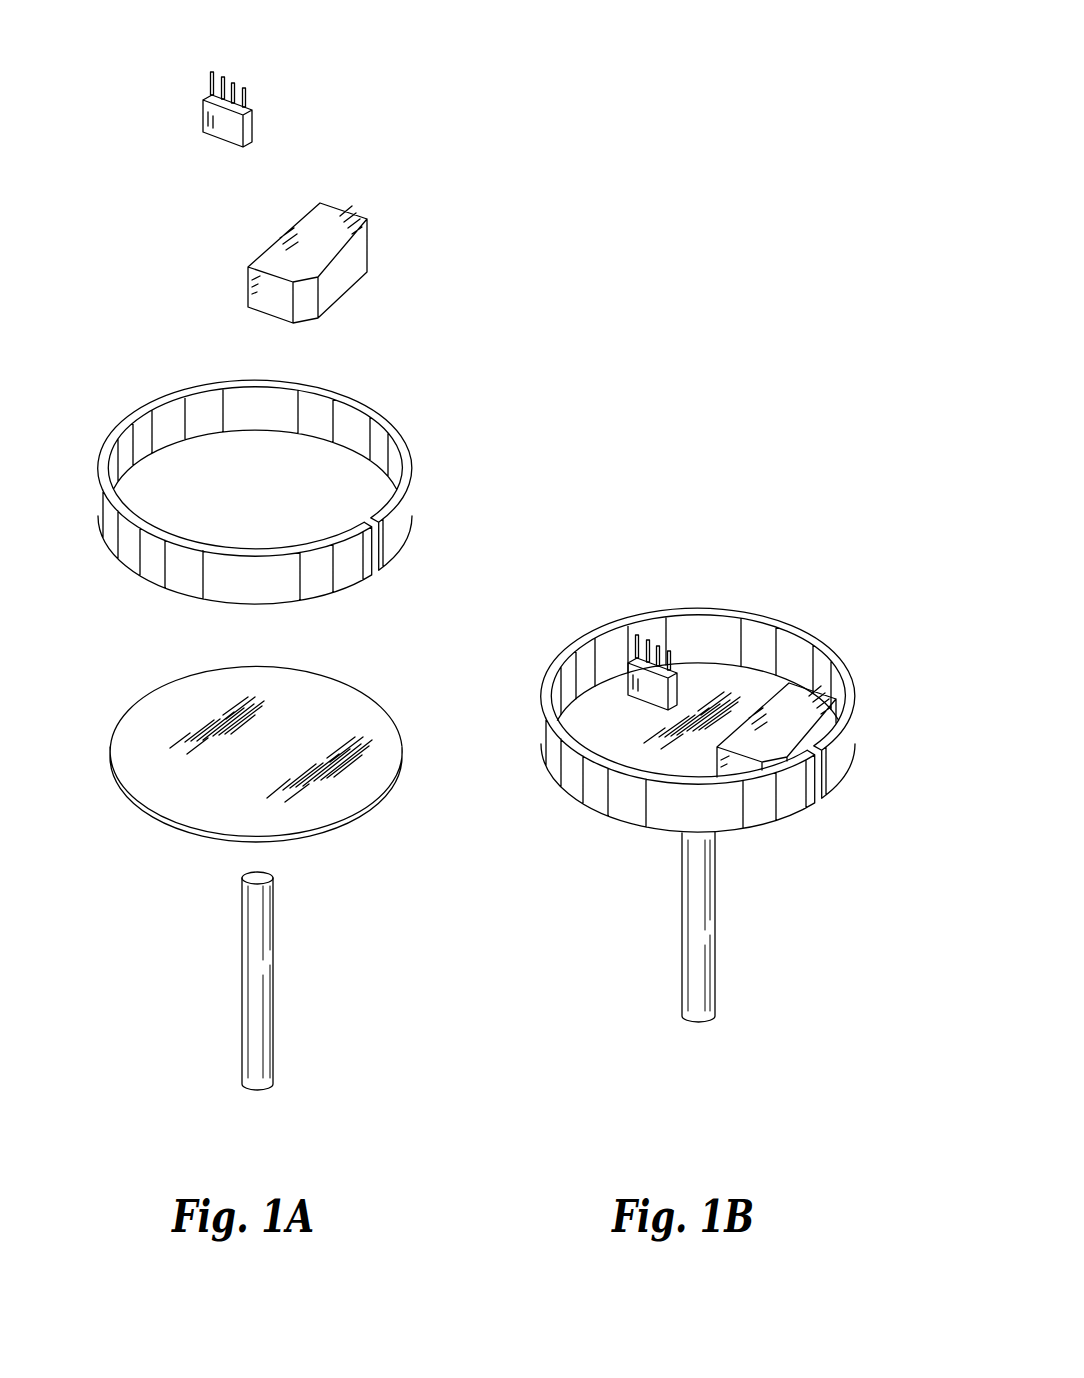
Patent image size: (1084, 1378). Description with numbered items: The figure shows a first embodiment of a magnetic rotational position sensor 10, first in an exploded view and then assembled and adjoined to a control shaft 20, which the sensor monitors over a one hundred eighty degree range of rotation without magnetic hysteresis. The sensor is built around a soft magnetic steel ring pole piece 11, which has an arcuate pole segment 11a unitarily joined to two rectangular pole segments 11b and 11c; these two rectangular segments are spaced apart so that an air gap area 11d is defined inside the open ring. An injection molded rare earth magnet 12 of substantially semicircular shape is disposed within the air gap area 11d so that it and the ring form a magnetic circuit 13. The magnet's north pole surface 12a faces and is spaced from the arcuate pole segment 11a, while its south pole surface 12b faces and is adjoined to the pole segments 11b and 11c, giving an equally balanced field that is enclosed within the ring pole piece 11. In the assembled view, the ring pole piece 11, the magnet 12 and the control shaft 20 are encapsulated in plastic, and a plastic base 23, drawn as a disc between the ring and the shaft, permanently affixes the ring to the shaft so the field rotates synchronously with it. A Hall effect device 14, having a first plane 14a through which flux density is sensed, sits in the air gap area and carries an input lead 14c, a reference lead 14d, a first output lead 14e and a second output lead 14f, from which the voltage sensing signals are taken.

In FIG. 1A, the magnetic rotational position sensor 10 is at (123, 65).
In FIG. 1B, the magnetic rotational position sensor 10 is at (777, 592).
In FIG. 1A, the ring pole piece 11 is at (288, 471).
In FIG. 1B, the ring pole piece 11 is at (684, 695).
In FIG. 1A, the pole segment 11a is at (233, 380).
In FIG. 1B, the pole segment 11a is at (550, 750).
In FIG. 1A, the pole segment 11b is at (363, 557).
In FIG. 1B, the pole segment 11b is at (803, 783).
In FIG. 1A, the pole segment 11c is at (402, 520).
In FIG. 1B, the pole segment 11c is at (850, 747).
In FIG. 1A, the air gap area 11d is at (177, 480).
In FIG. 1B, the air gap area 11d is at (727, 673).
In FIG. 1A, the injection molded rare earth magnet 12 is at (346, 257).
In FIG. 1B, the injection molded rare earth magnet 12 is at (706, 750).
In FIG. 1A, the north pole surface 12a is at (255, 262).
In FIG. 1A, the south pole surface 12b is at (357, 267).
In FIG. 1A, the magnetic circuit 13 is at (465, 133).
In FIG. 1B, the magnetic circuit 13 is at (598, 717).
In FIG. 1A, the Hall effect device 14 is at (234, 75).
In FIG. 1B, the Hall effect device 14 is at (627, 675).
In FIG. 1A, the first plane 14a is at (203, 126).
In FIG. 1A, the input lead 14c is at (212, 72).
In FIG. 1A, the reference lead 14d is at (223, 77).
In FIG. 1A, the first output lead 14e is at (233, 83).
In FIG. 1A, the second output lead 14f is at (245, 88).
In FIG. 1A, the control shaft 20 is at (275, 997).
In FIG. 1B, the control shaft 20 is at (715, 925).
In FIG. 1A, the plastic base 23 is at (173, 843).